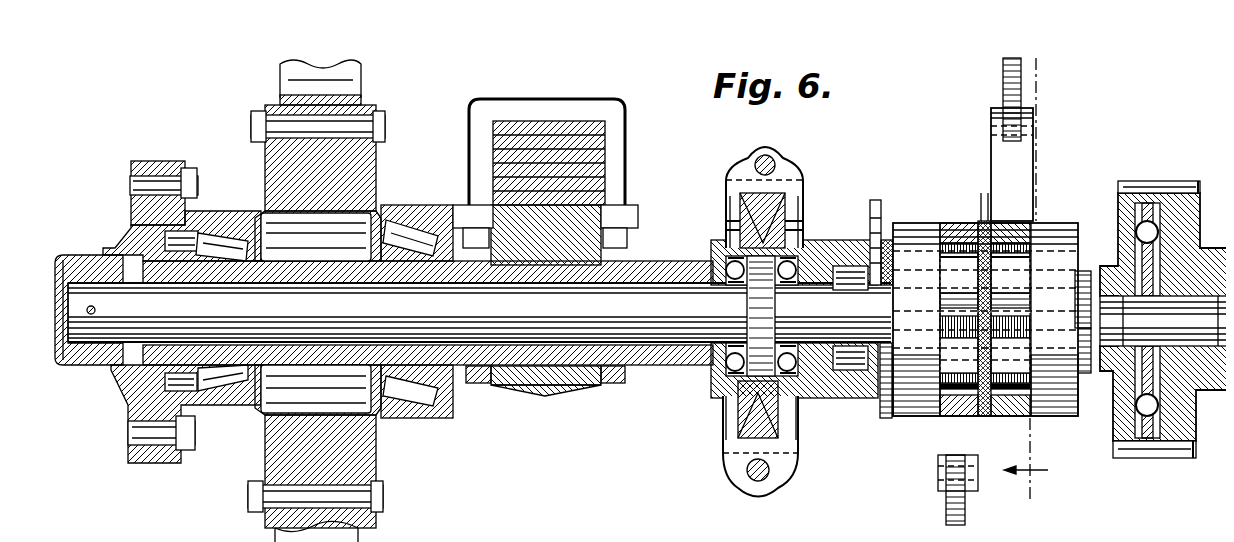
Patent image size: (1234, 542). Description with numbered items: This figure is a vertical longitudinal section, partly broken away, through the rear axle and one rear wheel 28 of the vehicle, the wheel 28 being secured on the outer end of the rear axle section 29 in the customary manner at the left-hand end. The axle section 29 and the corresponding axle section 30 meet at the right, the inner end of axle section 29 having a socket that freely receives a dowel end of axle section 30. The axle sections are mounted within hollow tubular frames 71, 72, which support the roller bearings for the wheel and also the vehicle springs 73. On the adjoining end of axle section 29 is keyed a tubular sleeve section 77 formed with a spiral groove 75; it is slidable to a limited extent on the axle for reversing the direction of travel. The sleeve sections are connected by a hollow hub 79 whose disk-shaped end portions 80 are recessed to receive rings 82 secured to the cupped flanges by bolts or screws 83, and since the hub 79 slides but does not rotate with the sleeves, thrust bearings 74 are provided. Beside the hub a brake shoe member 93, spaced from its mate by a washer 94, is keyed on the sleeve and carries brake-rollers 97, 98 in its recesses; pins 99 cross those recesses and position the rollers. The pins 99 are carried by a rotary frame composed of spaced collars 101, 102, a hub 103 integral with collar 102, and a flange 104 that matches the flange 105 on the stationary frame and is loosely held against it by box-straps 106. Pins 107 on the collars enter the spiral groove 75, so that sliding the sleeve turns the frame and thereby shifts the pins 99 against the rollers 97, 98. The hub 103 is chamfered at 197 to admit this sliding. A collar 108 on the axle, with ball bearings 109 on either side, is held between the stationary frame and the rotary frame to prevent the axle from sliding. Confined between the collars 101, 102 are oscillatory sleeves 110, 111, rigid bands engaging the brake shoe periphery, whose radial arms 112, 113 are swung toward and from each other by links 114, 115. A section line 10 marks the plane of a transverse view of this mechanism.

The section line 10 is at (1034, 281).
The rear wheel 28 is at (336, 531).
The rear axle section 29 is at (479, 312).
The rear axle section 30 is at (1223, 365).
The hollow tubular frame 71 is at (650, 362).
The hollow tubular frame 72 is at (1000, 287).
The vehicle spring 73 is at (563, 125).
The thrust bearing 74 is at (1128, 236).
The spiral groove 75 is at (1075, 268).
The tubular sleeve section 77 is at (864, 258).
The hub 79 is at (1200, 400).
The end portion of hub 80 is at (1183, 230).
The ring 82 is at (1190, 182).
The bolt or screw 83 is at (1115, 180).
The brake shoe member 93 is at (937, 271).
The washer 94 is at (974, 212).
The brake-roller 97 is at (933, 245).
The brake-roller 98 is at (1010, 292).
The pin 99 is at (1020, 215).
The collar 101 is at (1055, 408).
The collar 102 is at (878, 410).
The hub 103 is at (845, 377).
The flange 104 is at (775, 432).
The flange 105 is at (728, 430).
The box-strap 106 is at (722, 474).
The pin 107 is at (872, 392).
The collar 108 is at (745, 297).
The ball bearing 109 is at (725, 250).
The oscillatory sleeve 110 is at (1012, 214).
The oscillatory sleeve 111 is at (957, 214).
The arm 112 is at (990, 110).
The arm 113 is at (935, 445).
The oscillatory link 114 is at (996, 69).
The oscillatory link 115 is at (940, 508).
The chamfer 197 is at (840, 208).